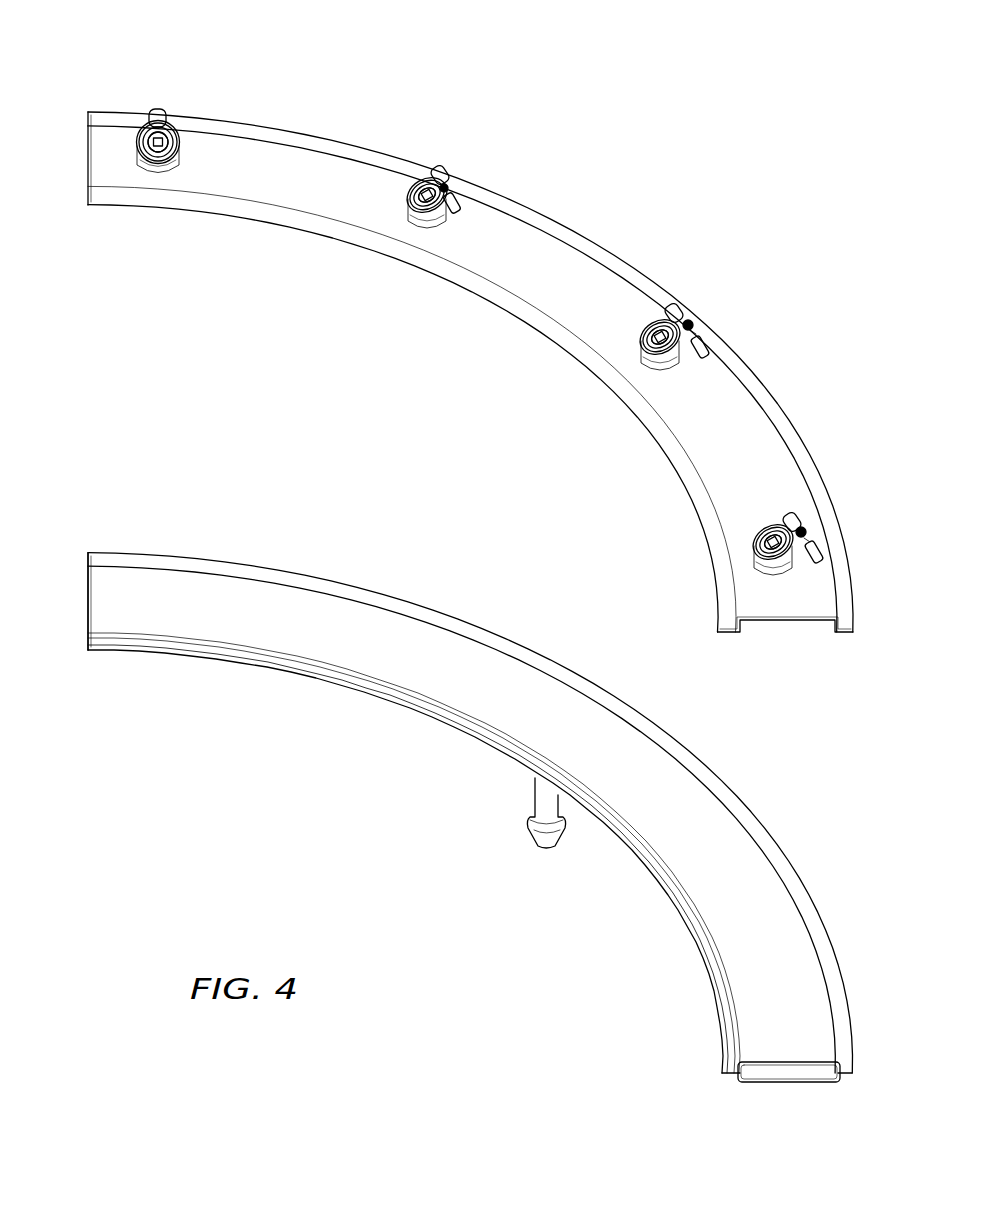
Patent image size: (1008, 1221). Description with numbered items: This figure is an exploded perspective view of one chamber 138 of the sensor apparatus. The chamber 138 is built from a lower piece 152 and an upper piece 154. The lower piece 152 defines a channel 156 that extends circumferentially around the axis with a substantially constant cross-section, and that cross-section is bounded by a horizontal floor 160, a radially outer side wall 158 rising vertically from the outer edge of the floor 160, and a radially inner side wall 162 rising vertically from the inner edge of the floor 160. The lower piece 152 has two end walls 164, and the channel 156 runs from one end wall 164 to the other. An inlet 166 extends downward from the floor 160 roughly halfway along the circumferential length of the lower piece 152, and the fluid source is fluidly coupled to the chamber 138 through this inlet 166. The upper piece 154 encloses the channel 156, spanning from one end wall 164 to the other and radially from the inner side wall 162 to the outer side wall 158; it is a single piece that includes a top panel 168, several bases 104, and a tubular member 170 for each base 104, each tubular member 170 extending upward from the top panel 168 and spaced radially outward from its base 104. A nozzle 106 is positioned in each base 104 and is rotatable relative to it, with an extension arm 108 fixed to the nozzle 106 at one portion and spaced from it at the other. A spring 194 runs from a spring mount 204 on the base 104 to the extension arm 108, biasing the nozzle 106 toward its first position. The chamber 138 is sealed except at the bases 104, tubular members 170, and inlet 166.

The base 104 is at (172, 148).
The nozzle 106 is at (158, 150).
The extension arm 108 is at (700, 332).
The chamber 138 is at (853, 640).
The lower piece 152 is at (270, 676).
The upper piece 154 is at (268, 222).
The channel 156 is at (440, 655).
The radially outer side wall 158 is at (840, 975).
The floor 160 is at (790, 940).
The radially inner side wall 162 is at (720, 990).
The end wall 164 is at (88, 572).
The inlet 166 is at (533, 802).
The top panel 168 is at (588, 282).
The tubular member 170 is at (455, 200).
The spring 194 is at (446, 185).
The spring mount 204 is at (158, 108).